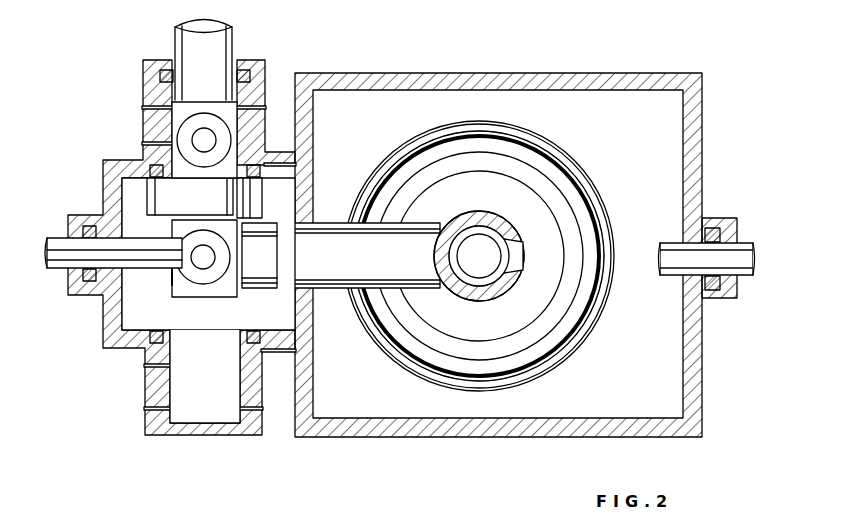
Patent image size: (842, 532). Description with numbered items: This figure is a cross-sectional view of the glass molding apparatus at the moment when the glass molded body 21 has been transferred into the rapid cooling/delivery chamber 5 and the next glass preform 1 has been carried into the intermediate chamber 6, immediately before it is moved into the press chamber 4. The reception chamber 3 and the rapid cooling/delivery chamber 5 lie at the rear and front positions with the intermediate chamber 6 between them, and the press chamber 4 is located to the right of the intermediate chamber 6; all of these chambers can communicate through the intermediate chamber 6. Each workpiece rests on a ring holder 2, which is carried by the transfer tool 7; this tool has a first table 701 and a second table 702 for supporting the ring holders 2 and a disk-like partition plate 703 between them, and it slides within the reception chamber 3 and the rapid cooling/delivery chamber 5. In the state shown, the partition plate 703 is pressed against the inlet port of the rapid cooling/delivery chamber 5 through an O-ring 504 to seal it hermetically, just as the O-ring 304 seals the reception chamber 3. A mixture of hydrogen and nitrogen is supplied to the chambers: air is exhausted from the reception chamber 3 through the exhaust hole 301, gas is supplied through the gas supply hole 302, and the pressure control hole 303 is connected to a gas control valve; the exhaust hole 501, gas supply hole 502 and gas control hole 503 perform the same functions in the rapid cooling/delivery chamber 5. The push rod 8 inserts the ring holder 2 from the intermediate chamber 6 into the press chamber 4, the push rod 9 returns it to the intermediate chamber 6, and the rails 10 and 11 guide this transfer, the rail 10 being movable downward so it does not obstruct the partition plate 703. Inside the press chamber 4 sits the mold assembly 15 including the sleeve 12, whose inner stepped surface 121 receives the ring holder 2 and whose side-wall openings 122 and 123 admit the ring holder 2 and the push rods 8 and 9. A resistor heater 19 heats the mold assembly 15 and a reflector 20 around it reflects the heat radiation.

The glass preform 1 is at (172, 282).
The ring holder 2 is at (196, 150).
The reception chamber 3 is at (207, 400).
The press chamber 4 is at (540, 215).
The rapid cooling/delivery chamber 5 is at (162, 108).
The intermediate chamber 6 is at (180, 247).
The transfer tool 7 is at (170, 42).
The push rod 8 is at (60, 268).
The push rod 9 is at (744, 278).
The rail 10 is at (260, 268).
The rail 11 is at (335, 268).
The sleeve 12 is at (492, 256).
The mold assembly 15 is at (490, 305).
The resistor heater 19 is at (565, 200).
The reflector 20 is at (609, 212).
The glass molded body 21 is at (202, 140).
The stepped surface 121 is at (490, 226).
The opening 122 is at (451, 248).
The opening 123 is at (516, 260).
The exhaust hole 301 is at (264, 409).
The gas supply hole 302 is at (144, 408).
The pressure control hole 303 is at (144, 366).
The O-ring 304 is at (290, 350).
The exhaust hole 501 is at (268, 107).
The gas supply hole 502 is at (144, 143).
The gas control hole 503 is at (144, 107).
The O-ring 504 is at (290, 163).
The first table 701 is at (176, 281).
The second table 702 is at (148, 196).
The partition plate 703 is at (262, 198).